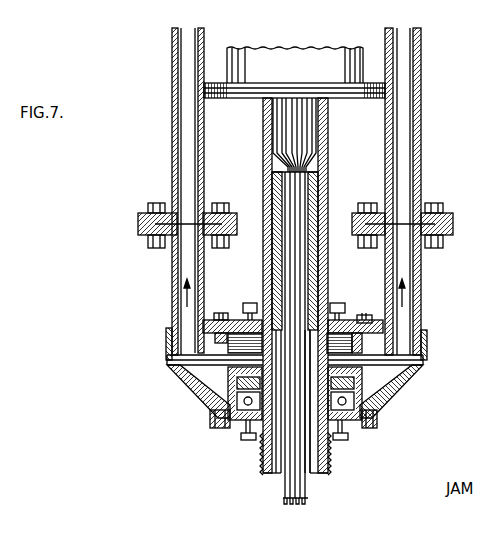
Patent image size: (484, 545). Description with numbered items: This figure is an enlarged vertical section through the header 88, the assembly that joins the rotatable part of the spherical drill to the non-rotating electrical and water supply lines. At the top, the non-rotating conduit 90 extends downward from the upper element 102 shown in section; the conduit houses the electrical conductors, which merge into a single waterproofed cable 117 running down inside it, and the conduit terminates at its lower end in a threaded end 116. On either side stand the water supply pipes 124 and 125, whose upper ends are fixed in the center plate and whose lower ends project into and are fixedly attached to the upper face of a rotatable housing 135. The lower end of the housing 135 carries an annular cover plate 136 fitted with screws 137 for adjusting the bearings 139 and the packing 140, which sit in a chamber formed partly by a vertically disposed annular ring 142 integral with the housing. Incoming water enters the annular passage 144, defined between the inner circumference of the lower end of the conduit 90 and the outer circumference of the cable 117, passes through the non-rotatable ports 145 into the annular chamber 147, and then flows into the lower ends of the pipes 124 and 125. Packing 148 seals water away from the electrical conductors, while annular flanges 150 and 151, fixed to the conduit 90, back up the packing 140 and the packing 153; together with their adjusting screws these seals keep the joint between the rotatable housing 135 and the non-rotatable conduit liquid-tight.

The header 88 is at (168, 177).
The conduit 90 is at (329, 135).
The cable cap 102 is at (296, 52).
The threaded end 116 is at (324, 463).
The waterproofed cable 117 is at (290, 488).
The water supply pipe 124 is at (406, 52).
The water supply pipe 125 is at (186, 50).
The housing 135 is at (410, 378).
The annular cover plate 136 is at (353, 429).
The screws 137 is at (248, 442).
The bearings 139 is at (232, 408).
The packing 140 is at (352, 385).
The annular ring 142 is at (360, 395).
The annular passage 144 is at (313, 472).
The ports 145 is at (172, 367).
The annular chamber 147 is at (198, 392).
The packing 148 is at (316, 193).
The annular flange 150 is at (345, 354).
The annular flange 151 is at (348, 366).
The packing 153 is at (227, 340).